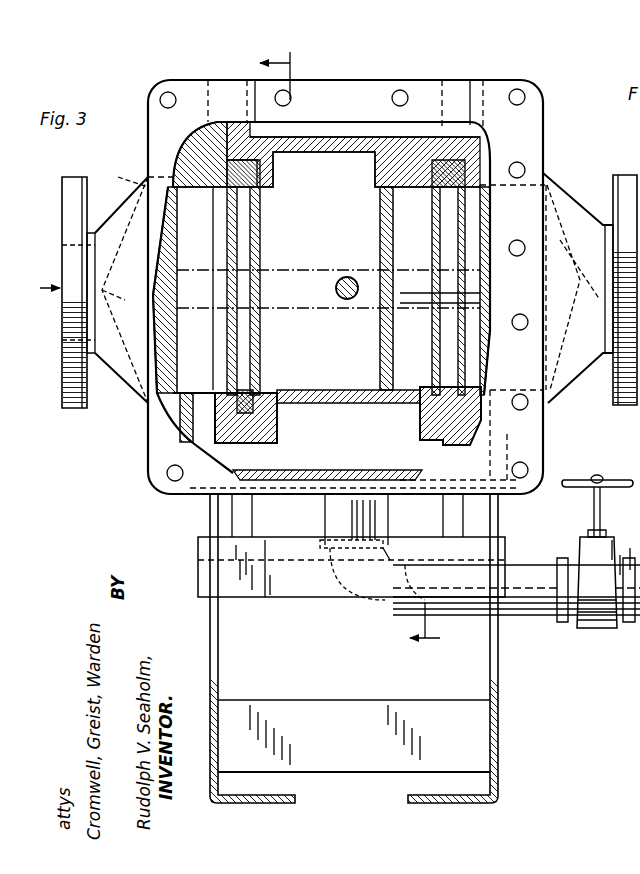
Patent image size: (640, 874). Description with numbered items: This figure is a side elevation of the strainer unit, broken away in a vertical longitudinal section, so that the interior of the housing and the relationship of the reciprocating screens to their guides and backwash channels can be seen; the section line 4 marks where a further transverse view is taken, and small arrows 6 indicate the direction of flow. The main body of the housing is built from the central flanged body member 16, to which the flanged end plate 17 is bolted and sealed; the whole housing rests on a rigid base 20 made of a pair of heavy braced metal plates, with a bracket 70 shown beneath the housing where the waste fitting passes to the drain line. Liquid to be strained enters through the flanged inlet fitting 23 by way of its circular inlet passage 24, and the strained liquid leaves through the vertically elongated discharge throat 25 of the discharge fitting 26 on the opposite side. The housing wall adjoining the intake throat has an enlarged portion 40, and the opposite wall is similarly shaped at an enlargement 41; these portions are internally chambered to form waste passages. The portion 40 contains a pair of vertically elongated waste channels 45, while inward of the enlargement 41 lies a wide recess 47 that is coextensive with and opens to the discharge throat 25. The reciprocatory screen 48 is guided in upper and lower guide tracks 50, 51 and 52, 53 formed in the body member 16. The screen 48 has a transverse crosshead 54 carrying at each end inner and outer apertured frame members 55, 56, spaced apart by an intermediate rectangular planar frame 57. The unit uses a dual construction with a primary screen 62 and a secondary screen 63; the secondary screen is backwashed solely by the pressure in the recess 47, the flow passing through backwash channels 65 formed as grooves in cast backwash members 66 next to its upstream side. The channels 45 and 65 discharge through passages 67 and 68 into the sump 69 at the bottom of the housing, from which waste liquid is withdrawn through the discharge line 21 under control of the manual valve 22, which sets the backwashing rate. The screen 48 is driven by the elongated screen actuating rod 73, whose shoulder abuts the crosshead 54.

The section line 4— 4 is at (350, 357).
The flow arrows 6 is at (203, 432).
The central flanged body member 16 is at (187, 263).
The flanged end plate 17 is at (530, 434).
The base 20 is at (338, 708).
The discharge line 21 is at (634, 644).
The manual valve 22 is at (598, 590).
The flanged inlet fitting 23 is at (115, 212).
The circular inlet passage 24 is at (62, 258).
The discharge throat 25 is at (500, 385).
The discharge fitting 26 is at (568, 210).
The enlarged portion 40 is at (168, 182).
The enlargement 41 is at (493, 278).
The waste channels 45 is at (190, 375).
The recess 47 is at (470, 235).
The reciprocatory screen 48 is at (345, 367).
The upper guide track 50 is at (273, 186).
The lower guide track 51 is at (290, 390).
The upper guide track 52 is at (392, 180).
The lower guide track 53 is at (412, 428).
The crosshead 54 is at (320, 275).
The inner screen frame member 55 is at (440, 242).
The outer screen frame member 56 is at (170, 390).
The intermediate rectangular planar frame 57 is at (258, 150).
The primary screen 62 is at (262, 244).
The secondary screen 63 is at (432, 326).
The backwash channels 65 is at (393, 252).
The backwash members 66 is at (383, 345).
The passage 67 is at (190, 420).
The passage 68 is at (410, 395).
The sump 69 is at (288, 490).
The bracket 70 is at (330, 537).
The screen actuating rod 73 is at (346, 302).